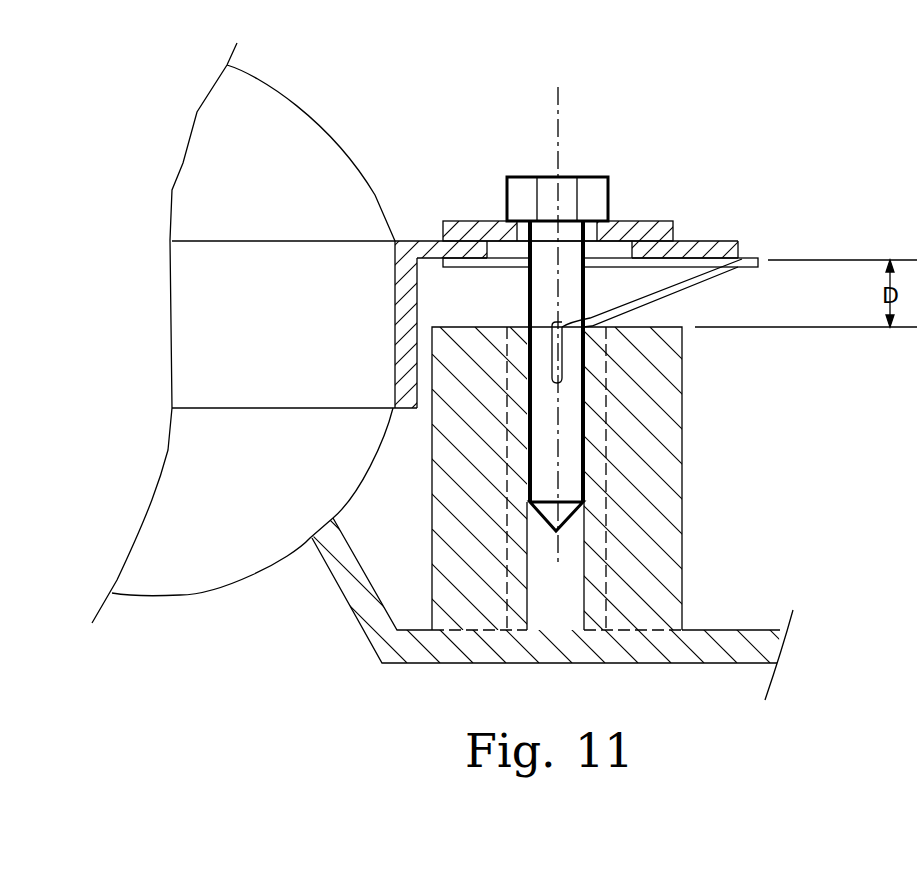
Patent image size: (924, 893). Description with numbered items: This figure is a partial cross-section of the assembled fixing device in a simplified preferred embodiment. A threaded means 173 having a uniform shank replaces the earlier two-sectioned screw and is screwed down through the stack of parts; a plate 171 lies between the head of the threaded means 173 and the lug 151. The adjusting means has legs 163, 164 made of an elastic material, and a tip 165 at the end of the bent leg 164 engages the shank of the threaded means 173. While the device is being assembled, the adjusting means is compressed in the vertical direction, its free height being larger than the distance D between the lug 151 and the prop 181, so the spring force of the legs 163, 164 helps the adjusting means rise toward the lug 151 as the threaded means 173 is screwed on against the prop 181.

The lug 151 is at (450, 260).
The mounting plate 171 is at (477, 218).
The threaded means 173 is at (568, 282).
The leg of adjusting means 163 is at (680, 283).
The leg of adjusting means 164 is at (680, 283).
The finger tip hook 165 is at (557, 372).
The prop 181 is at (658, 543).